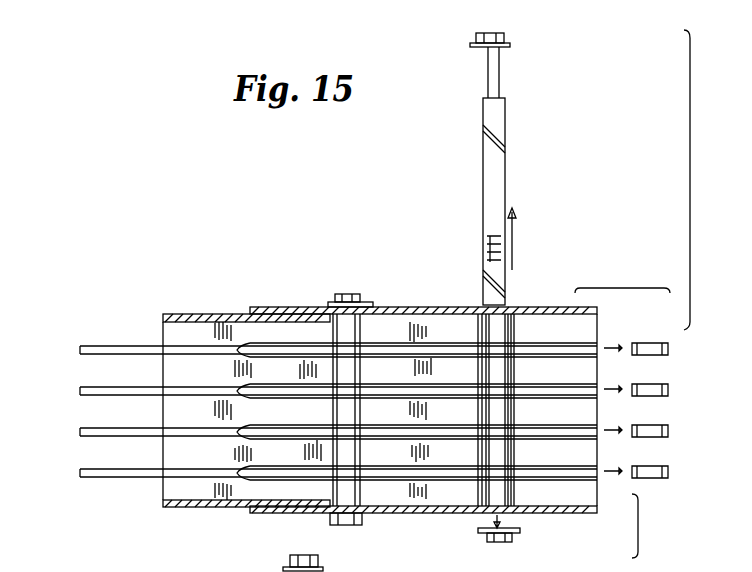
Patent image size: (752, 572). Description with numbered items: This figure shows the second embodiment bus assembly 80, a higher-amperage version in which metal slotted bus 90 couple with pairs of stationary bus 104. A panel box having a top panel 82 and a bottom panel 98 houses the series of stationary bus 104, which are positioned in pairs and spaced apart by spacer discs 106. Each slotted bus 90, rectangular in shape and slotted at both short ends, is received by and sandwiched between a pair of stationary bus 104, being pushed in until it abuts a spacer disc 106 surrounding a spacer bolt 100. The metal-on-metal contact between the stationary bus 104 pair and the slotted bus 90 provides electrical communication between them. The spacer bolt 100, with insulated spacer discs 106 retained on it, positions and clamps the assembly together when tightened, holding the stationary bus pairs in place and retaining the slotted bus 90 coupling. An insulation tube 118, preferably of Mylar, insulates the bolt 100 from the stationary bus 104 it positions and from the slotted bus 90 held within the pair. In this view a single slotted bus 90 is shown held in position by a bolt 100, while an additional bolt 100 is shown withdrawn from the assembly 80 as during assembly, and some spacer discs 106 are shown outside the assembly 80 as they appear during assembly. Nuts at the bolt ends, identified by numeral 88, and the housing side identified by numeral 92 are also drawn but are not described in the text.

The second embodiment bus assembly 80 is at (228, 302).
The top panel 82 is at (388, 308).
The nut 88 is at (338, 522).
The slotted bus 90 is at (80, 391).
The housing 92 is at (205, 314).
The bottom panel 98 is at (450, 508).
The spacer bolt 100 is at (498, 70).
The stationary bus 104 is at (250, 386).
The spacer disc 106 is at (333, 492).
The insulation tube 118 is at (505, 138).